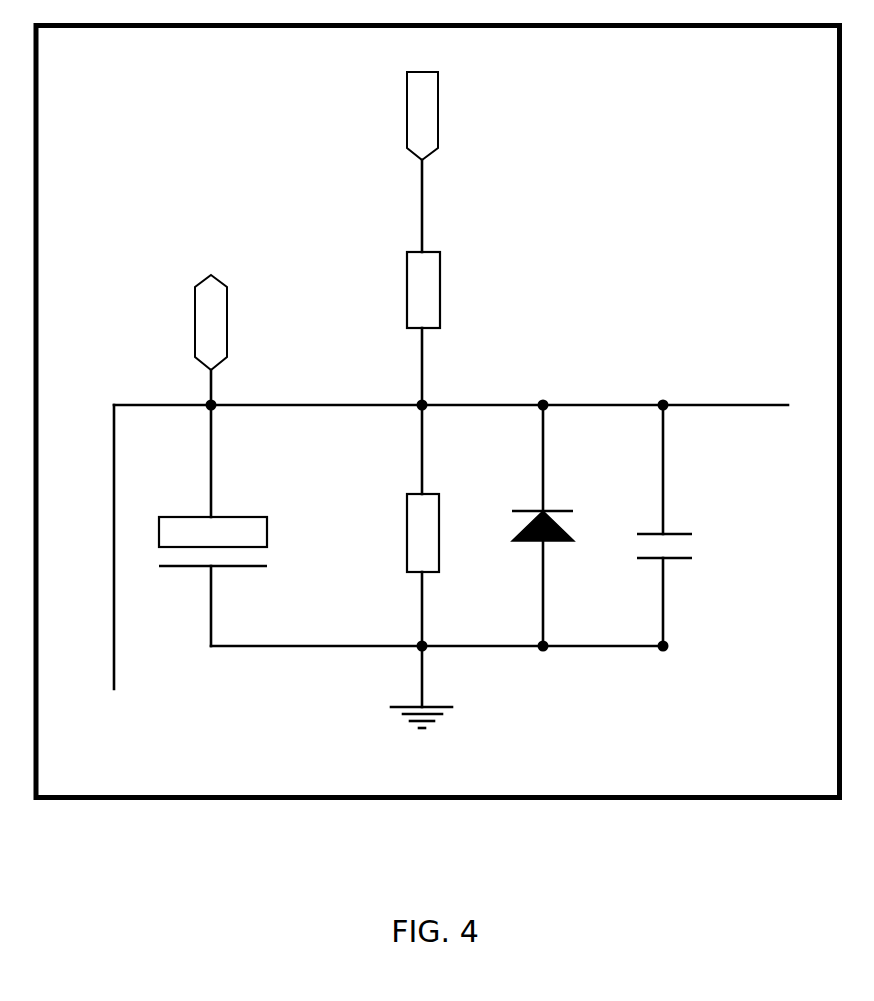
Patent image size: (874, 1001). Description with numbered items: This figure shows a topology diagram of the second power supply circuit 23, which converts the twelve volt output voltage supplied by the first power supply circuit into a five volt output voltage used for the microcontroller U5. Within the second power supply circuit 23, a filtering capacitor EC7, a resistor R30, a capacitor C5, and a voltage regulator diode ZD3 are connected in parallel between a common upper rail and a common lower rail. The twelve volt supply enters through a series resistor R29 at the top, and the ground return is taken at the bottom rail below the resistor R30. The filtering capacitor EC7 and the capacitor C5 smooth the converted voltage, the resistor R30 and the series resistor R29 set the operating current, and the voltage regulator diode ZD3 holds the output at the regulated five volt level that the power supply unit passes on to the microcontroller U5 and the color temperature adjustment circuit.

The second power supply circuit 23 is at (438, 459).
The resistor R29 (1K) R29 is at (446, 290).
The resistor R30 is at (446, 533).
The filtering capacitor EC7 is at (278, 526).
The zener diode ZD3 (5.1V) ZD3 is at (568, 549).
The capacitor C5 is at (725, 553).